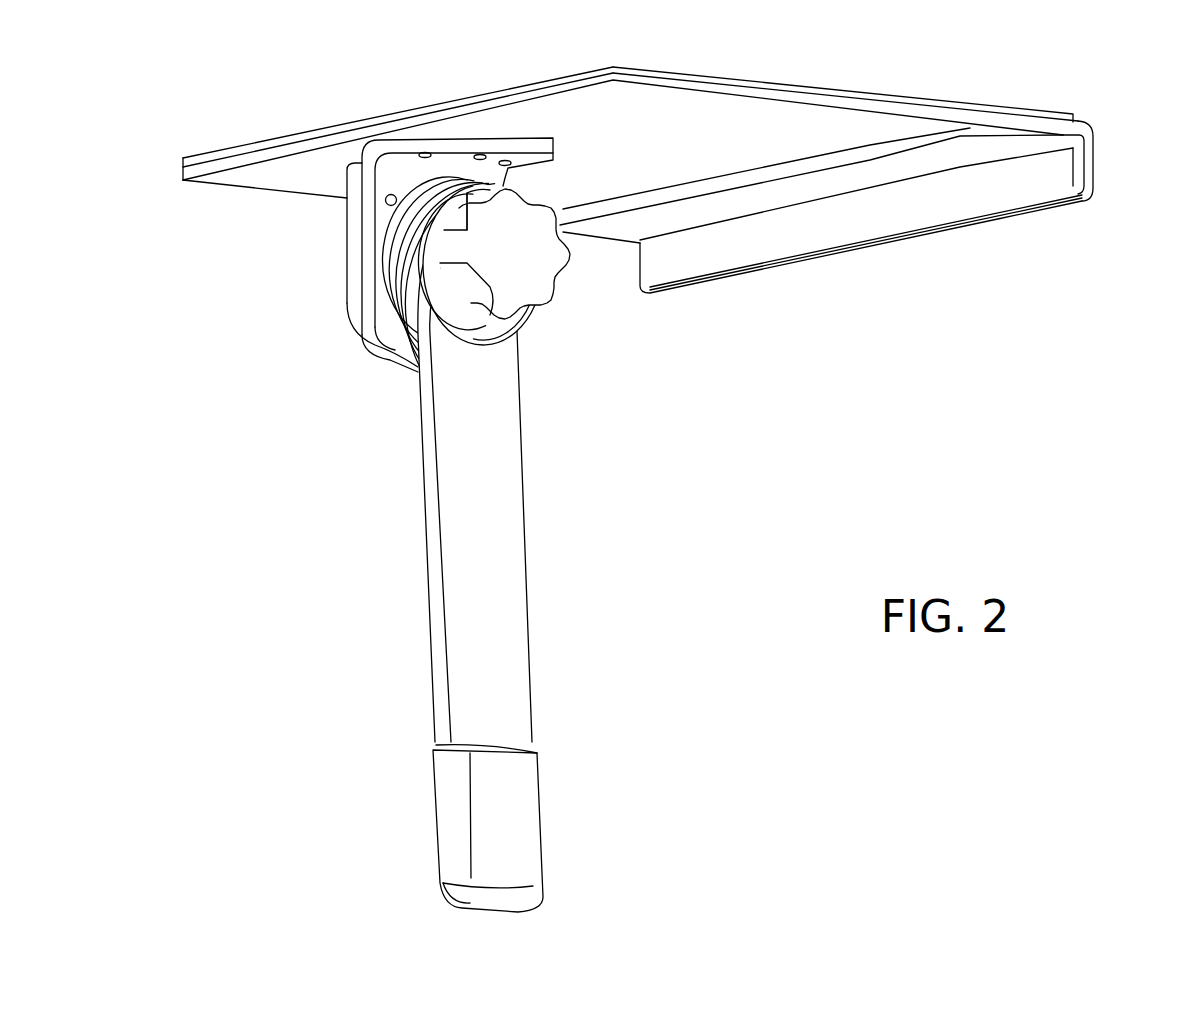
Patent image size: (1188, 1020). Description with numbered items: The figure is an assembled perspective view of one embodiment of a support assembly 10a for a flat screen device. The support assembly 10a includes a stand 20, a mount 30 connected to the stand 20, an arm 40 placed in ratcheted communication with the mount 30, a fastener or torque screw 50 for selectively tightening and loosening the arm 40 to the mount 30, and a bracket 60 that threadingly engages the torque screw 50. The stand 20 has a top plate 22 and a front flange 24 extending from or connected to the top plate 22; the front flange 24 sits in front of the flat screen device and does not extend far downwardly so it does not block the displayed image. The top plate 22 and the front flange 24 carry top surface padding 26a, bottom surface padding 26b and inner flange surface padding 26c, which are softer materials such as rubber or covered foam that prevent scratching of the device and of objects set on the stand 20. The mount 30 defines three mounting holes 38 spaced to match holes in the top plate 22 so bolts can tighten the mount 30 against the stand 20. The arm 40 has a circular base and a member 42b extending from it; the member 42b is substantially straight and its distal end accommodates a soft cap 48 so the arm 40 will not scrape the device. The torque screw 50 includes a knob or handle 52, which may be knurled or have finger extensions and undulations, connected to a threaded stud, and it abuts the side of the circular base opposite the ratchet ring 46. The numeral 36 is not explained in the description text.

The support assembly 10a is at (800, 437).
The stand 20 is at (1090, 118).
The top plate 22 is at (232, 180).
The front flange 24 is at (1098, 195).
The top surface padding 26a is at (992, 105).
The bottom surface padding 26b is at (843, 155).
The inner flange surface padding 26c is at (950, 208).
The mount 30 is at (400, 140).
The boss 36 is at (382, 350).
The mounting holes 38 is at (425, 152).
The arm 40 is at (435, 592).
The member 42b is at (510, 580).
The ratchet ring 46 is at (397, 366).
The soft cap 48 is at (515, 800).
The torque screw 50 is at (540, 320).
The handle 52 is at (545, 285).
The bracket 60 is at (370, 328).